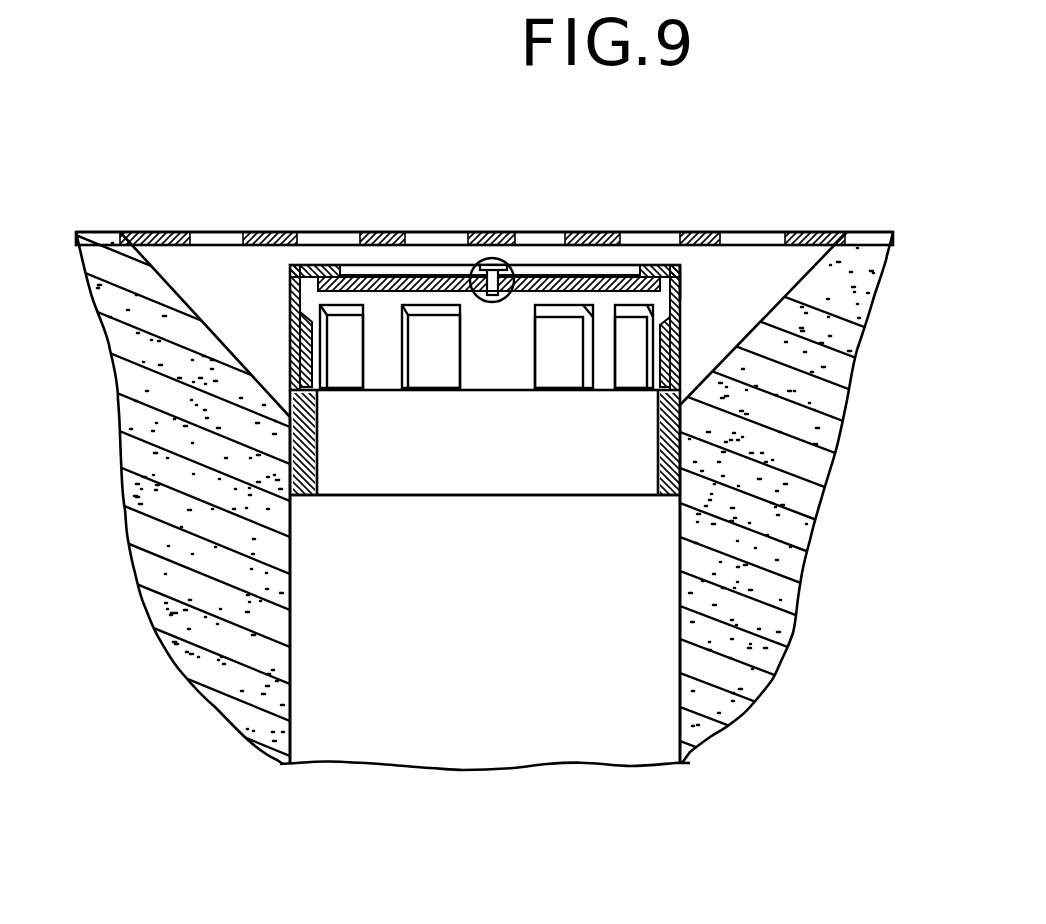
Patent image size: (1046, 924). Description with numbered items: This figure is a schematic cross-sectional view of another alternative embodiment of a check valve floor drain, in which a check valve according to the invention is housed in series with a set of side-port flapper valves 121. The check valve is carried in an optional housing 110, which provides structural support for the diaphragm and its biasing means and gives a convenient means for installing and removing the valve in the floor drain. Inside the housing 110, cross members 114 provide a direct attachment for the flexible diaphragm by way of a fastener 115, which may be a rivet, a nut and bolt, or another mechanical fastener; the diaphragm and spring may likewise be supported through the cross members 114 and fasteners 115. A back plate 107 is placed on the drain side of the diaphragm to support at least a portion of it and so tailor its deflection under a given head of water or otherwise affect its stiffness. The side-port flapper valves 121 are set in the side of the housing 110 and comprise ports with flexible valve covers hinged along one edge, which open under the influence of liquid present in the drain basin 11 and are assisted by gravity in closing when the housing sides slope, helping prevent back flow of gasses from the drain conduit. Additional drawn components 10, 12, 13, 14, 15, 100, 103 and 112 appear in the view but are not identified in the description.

The installation assembly 10 is at (757, 186).
The drain basin 11 is at (195, 247).
The backfill space 100 is at (242, 248).
The concrete foundation 12 is at (292, 740).
The cover plate 13 is at (380, 245).
The housing 14 is at (277, 297).
The base block 15 is at (500, 582).
The top plate 103 is at (567, 265).
The back plate 107 is at (522, 295).
The housing 110 is at (688, 297).
The lower housing wall 112 is at (304, 497).
The cross members 114 is at (433, 268).
The fastener 115 is at (506, 257).
The side-port flapper valves 121 is at (300, 355).